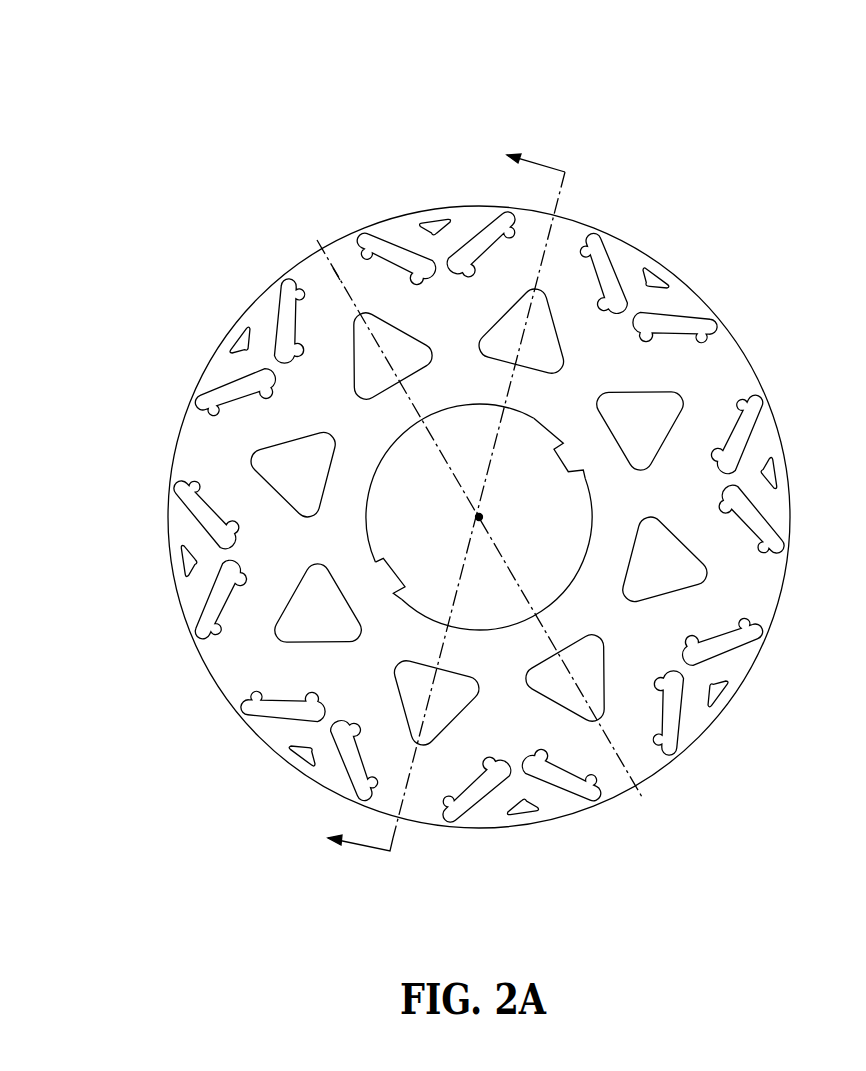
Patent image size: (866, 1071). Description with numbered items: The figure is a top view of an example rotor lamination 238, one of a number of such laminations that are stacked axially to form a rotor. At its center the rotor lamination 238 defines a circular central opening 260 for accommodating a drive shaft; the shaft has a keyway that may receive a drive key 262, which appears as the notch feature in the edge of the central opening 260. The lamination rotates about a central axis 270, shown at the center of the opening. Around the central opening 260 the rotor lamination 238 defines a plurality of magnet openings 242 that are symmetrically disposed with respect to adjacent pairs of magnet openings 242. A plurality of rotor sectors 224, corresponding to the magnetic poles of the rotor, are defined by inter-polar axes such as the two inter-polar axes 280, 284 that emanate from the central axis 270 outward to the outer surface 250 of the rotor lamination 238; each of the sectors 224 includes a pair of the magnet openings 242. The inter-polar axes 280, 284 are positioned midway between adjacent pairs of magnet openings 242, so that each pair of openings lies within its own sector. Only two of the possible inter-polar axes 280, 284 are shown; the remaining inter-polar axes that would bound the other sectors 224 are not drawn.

The rotor sectors 224 is at (468, 310).
The rotor lamination 238 is at (349, 266).
The magnet openings 242 is at (467, 243).
The outer surface 250 is at (562, 820).
The circular central opening 260 is at (532, 422).
The drive key 262 is at (560, 470).
The central axis 270 is at (483, 517).
The inter-polar axis 280 is at (392, 840).
The inter-polar axis 284 is at (645, 800).